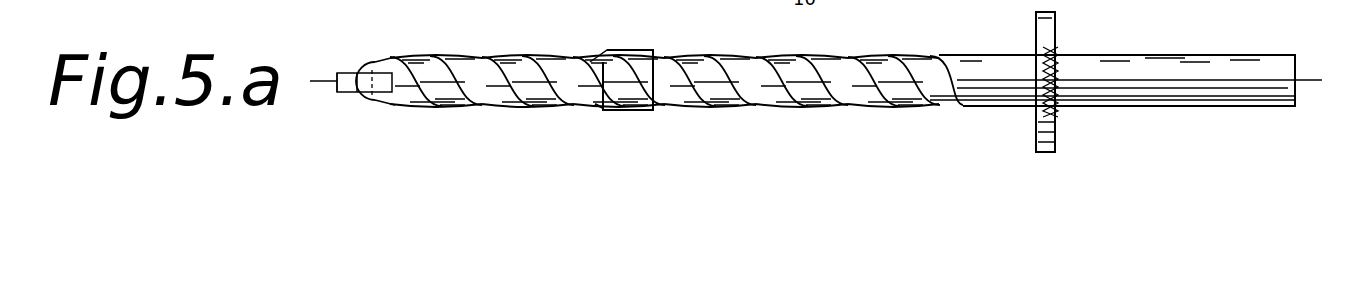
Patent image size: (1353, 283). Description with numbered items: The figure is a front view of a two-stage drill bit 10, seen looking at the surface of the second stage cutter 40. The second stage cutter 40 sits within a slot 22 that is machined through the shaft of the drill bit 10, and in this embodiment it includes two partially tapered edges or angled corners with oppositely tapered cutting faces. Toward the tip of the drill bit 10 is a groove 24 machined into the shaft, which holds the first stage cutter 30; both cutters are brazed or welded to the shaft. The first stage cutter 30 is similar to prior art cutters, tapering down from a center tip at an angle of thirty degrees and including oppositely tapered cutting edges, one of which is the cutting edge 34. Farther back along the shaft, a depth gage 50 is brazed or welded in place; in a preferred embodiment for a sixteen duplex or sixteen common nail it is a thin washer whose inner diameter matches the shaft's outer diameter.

The drill bit 10 is at (749, 119).
The slot 22 is at (590, 100).
The groove 24 is at (363, 68).
The first stage cutter 30 is at (365, 100).
The cutting edge 34 is at (338, 74).
The second stage cutter 40 is at (640, 50).
The depth gage 50 is at (1036, 128).